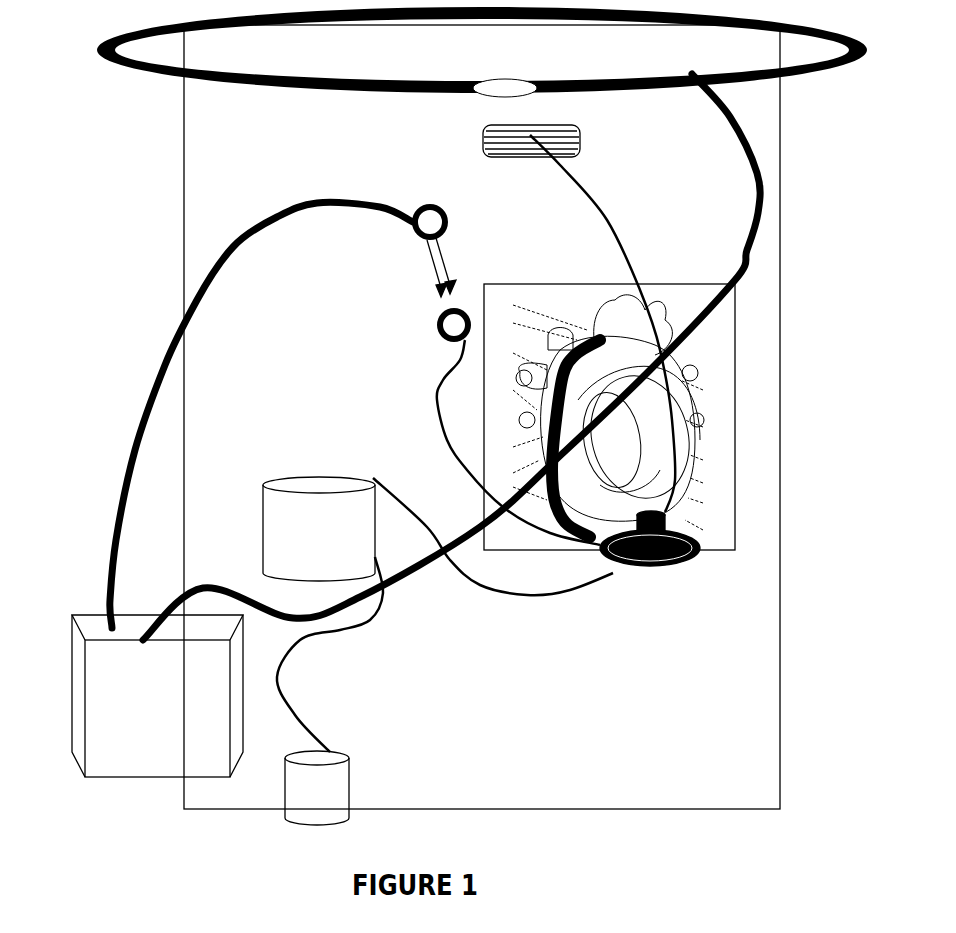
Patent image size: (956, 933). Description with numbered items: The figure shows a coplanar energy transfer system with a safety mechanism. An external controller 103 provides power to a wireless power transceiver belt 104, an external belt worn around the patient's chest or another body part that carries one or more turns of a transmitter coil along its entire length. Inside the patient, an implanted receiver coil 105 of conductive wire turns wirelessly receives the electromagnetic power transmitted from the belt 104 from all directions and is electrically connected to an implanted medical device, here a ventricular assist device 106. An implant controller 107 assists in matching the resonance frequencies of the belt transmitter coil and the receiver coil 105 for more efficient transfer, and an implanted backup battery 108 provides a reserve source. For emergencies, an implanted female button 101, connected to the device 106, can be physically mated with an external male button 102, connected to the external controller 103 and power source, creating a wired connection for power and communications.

The implanted female button 101 is at (437, 327).
The external male button 102 is at (414, 225).
The external controller 103 is at (72, 614).
The wireless power transceiver belt 104 is at (95, 52).
The receiver coil 105 is at (578, 154).
The ventricular assist device (VAD) 106 is at (668, 577).
The implant controller 107 is at (262, 515).
The backup battery 108 is at (350, 783).